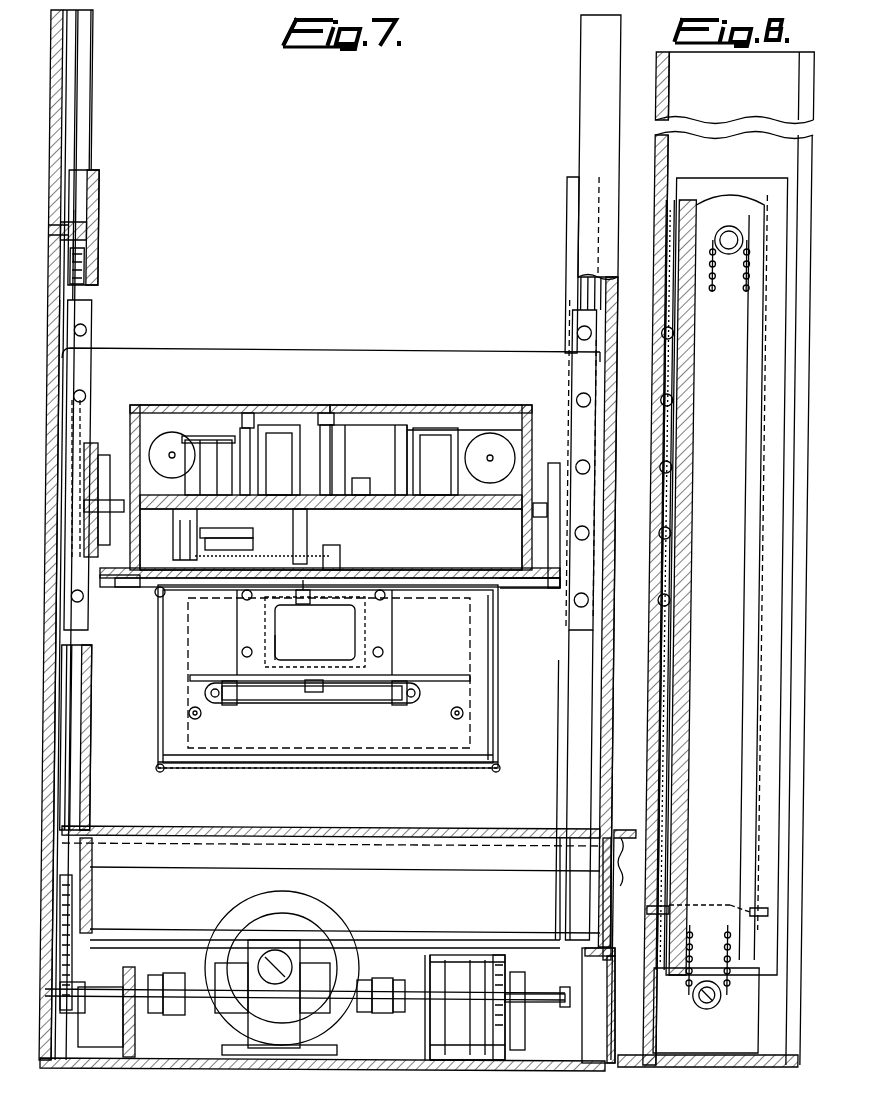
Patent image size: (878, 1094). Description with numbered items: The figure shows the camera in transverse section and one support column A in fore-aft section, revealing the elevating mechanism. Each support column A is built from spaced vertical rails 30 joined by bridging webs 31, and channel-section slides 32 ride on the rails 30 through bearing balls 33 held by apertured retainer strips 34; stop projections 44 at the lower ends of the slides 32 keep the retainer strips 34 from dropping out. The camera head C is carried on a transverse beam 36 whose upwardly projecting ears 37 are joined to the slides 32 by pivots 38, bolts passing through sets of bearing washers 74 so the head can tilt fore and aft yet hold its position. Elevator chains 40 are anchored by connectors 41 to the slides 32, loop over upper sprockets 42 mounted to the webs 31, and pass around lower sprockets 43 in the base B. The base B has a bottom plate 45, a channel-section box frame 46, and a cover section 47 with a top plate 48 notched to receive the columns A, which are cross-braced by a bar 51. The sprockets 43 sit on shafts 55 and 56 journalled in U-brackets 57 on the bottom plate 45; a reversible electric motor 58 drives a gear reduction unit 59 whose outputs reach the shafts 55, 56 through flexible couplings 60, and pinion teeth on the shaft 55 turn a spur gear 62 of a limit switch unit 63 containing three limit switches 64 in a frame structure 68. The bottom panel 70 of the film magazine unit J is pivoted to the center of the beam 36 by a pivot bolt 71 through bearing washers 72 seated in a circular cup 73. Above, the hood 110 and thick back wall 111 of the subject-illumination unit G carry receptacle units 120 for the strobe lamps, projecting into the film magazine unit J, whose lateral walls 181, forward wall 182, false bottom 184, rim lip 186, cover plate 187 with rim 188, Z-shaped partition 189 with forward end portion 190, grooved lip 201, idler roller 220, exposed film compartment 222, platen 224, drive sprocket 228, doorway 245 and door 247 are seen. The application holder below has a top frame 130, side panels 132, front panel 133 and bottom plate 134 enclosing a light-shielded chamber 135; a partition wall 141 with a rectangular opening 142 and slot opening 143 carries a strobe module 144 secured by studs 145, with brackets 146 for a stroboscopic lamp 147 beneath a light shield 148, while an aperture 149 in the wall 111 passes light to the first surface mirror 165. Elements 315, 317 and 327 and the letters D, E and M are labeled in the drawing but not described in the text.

In FIG. 7, the vertical rails 30 is at (93, 90).
In FIG. 8, the vertical rails 30 is at (656, 54).
In FIG. 7, the bridging webs 31 is at (58, 152).
In FIG. 8, the bridging webs 31 is at (702, 558).
In FIG. 7, the slides 32 is at (95, 662).
In FIG. 8, the slides 32 is at (768, 190).
In FIG. 7, the bearing balls 33 is at (578, 333).
In FIG. 8, the bearing balls 33 is at (676, 468).
In FIG. 7, the retainer strips 34 is at (578, 374).
In FIG. 8, the retainer strips 34 is at (673, 510).
In FIG. 7, the transverse beam 36 is at (530, 592).
In FIG. 7, the ears 37 is at (555, 463).
In FIG. 7, the pivots 38 is at (533, 515).
In FIG. 7, the elevator chains 40 is at (84, 272).
In FIG. 8, the elevator chains 40 is at (718, 292).
In FIG. 7, the connectors 41 is at (72, 905).
In FIG. 7, the sprockets 42 is at (83, 216).
In FIG. 8, the sprockets 42 is at (732, 232).
In FIG. 7, the sprockets 43 is at (80, 1018).
In FIG. 8, the sprockets 43 is at (719, 980).
In FIG. 8, the stop projections 44 is at (680, 908).
In FIG. 7, the bottom plate 45 is at (355, 1068).
In FIG. 8, the bottom plate 45 is at (655, 1067).
In FIG. 7, the box frame 46 is at (607, 1022).
In FIG. 8, the box frame 46 is at (668, 1040).
In FIG. 7, the cover section 47 is at (603, 905).
In FIG. 8, the cover section 47 is at (653, 880).
In FIG. 7, the top plate 48 is at (435, 828).
In FIG. 7, the bar 51 is at (432, 868).
In FIG. 8, the bar 51 is at (645, 848).
In FIG. 7, the shaft 55 is at (548, 993).
In FIG. 7, the shaft 56 is at (106, 990).
In FIG. 7, the U-brackets 57 is at (135, 1042).
In FIG. 7, the reversible electric motor 58 is at (300, 915).
In FIG. 7, the gear reduction unit 59 is at (335, 1025).
In FIG. 7, the flexible drive couplings 60 is at (175, 1015).
In FIG. 7, the spur gear 62 is at (493, 958).
In FIG. 7, the limit switch unit 63 is at (420, 962).
In FIG. 7, the limit switches 64 is at (437, 1015).
In FIG. 7, the frame structure 68 is at (435, 1035).
In FIG. 7, the bottom panel 70 is at (448, 568).
In FIG. 7, the pivot bolt 71 is at (335, 565).
In FIG. 7, the bearing washers 72 is at (350, 563).
In FIG. 7, the circular cup 73 is at (300, 604).
In FIG. 7, the bearing washers 74 is at (110, 470).
In FIG. 7, the hood 110 is at (470, 355).
In FIG. 7, the back wall 111 is at (300, 342).
In FIG. 7, the receptacle units 120 is at (170, 440).
In FIG. 7, the top frame 130 is at (158, 593).
In FIG. 7, the side panels 132 is at (535, 665).
In FIG. 7, the front panel 133 is at (489, 720).
In FIG. 7, the bottom plate 134 is at (380, 768).
In FIG. 7, the light-shielded chamber 135 is at (329, 673).
In FIG. 7, the partition wall 141 is at (238, 763).
In FIG. 7, the rectangular opening 142 is at (265, 610).
In FIG. 7, the slot opening 143 is at (330, 700).
In FIG. 7, the strobe module 144 is at (285, 768).
In FIG. 7, the studs 145 is at (451, 714).
In FIG. 7, the brackets 146 is at (222, 705).
In FIG. 7, the stroboscopic lamp 147 is at (280, 700).
In FIG. 7, the light shield 148 is at (455, 680).
In FIG. 7, the rectangular aperture 149 is at (275, 633).
In FIG. 7, the first surface mirror 165 is at (315, 632).
In FIG. 7, the lateral walls 181 is at (130, 425).
In FIG. 7, the forward wall 182 is at (331, 539).
In FIG. 7, the false bottom 184 is at (380, 509).
In FIG. 7, the rim lip 186 is at (130, 408).
In FIG. 7, the cover plate 187 is at (416, 425).
In FIG. 7, the rim 188 is at (532, 410).
In FIG. 7, the partition 189 is at (351, 473).
In FIG. 7, the forward end portion 190 is at (369, 460).
In FIG. 7, the grooved lip 201 is at (333, 425).
In FIG. 7, the idler roller 220 is at (435, 461).
In FIG. 7, the exposed film compartment 222 is at (246, 425).
In FIG. 7, the platen 224 is at (280, 424).
In FIG. 7, the drive sprocket 228 is at (208, 465).
In FIG. 7, the doorway 245 is at (330, 412).
In FIG. 7, the door 247 is at (252, 412).
In FIG. 7, the plate 315 is at (255, 544).
In FIG. 7, the bracket 317 is at (180, 548).
In FIG. 7, the plate 327 is at (240, 530).
In FIG. 7, the support columns A is at (96, 746).
In FIG. 8, the support columns A is at (641, 743).
In FIG. 7, the base B is at (96, 1075).
In FIG. 8, the base B is at (634, 817).
In FIG. 7, the camera head C is at (226, 322).
In FIG. 7, the unit D is at (200, 418).
In FIG. 7, the unit E is at (248, 413).
In FIG. 7, the subject-illumination unit G is at (373, 347).
In FIG. 7, the film magazine unit J is at (465, 420).
In FIG. 7, the motor unit M is at (286, 530).